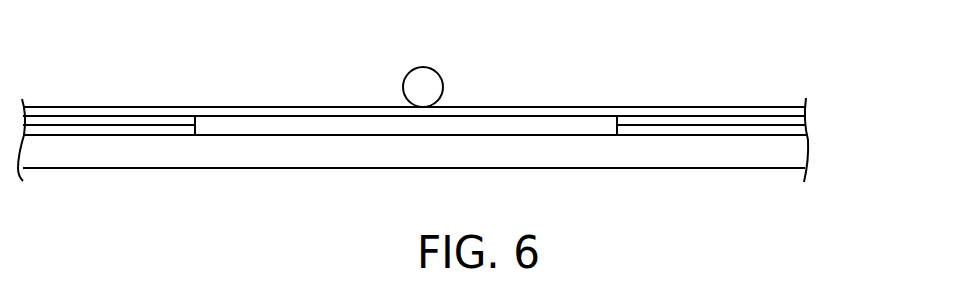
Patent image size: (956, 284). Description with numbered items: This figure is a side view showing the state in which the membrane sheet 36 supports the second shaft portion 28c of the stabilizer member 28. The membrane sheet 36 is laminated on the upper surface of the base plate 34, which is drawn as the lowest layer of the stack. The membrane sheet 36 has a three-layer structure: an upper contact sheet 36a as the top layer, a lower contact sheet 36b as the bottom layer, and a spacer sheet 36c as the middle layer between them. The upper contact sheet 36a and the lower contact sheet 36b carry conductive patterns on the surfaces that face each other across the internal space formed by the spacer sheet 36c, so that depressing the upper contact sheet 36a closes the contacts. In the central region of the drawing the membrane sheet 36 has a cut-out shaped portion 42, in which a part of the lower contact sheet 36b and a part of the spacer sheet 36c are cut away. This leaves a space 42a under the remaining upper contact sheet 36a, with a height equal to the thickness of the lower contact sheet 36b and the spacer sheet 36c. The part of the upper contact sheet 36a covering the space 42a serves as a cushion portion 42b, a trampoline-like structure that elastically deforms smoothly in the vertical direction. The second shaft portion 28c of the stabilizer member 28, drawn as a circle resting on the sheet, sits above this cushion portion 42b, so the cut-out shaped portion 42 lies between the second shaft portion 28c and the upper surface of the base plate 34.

The base plate 34 is at (792, 155).
The membrane sheet 36 is at (478, 117).
The upper contact sheet 36a is at (806, 113).
The spacer sheet 36c is at (806, 125).
The lower contact sheet 36b is at (806, 132).
The cut-out shaped portion 42 is at (406, 90).
The space 42a is at (323, 127).
The cushion portion 42b is at (242, 110).
The stabilizer member 28 is at (444, 63).
The second shaft portion 28c is at (423, 78).